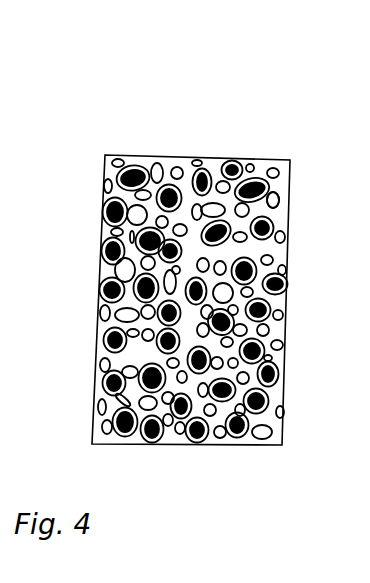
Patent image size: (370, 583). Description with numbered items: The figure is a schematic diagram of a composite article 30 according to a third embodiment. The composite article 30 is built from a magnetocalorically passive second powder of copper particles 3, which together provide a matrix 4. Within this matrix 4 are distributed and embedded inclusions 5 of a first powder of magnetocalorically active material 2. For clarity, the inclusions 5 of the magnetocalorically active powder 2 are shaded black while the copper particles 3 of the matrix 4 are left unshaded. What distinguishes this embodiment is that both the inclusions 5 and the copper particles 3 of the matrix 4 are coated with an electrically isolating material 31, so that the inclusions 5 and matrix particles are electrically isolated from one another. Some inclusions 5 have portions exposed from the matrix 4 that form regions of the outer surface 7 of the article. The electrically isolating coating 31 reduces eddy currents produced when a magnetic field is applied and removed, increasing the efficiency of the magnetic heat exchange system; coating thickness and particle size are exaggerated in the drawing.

The composite article 30 is at (312, 70).
The magnetocalorically active powder 2 is at (268, 183).
The electrically isolating coating 31 is at (291, 185).
The copper particles 3 is at (289, 204).
The inclusions 5 is at (103, 292).
The matrix 4 is at (281, 313).
The outer surface 7 is at (287, 402).